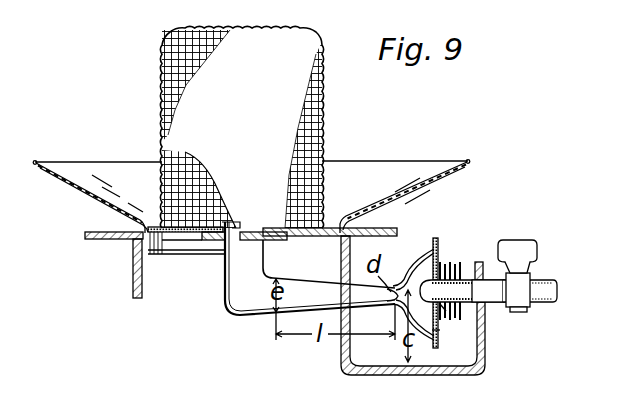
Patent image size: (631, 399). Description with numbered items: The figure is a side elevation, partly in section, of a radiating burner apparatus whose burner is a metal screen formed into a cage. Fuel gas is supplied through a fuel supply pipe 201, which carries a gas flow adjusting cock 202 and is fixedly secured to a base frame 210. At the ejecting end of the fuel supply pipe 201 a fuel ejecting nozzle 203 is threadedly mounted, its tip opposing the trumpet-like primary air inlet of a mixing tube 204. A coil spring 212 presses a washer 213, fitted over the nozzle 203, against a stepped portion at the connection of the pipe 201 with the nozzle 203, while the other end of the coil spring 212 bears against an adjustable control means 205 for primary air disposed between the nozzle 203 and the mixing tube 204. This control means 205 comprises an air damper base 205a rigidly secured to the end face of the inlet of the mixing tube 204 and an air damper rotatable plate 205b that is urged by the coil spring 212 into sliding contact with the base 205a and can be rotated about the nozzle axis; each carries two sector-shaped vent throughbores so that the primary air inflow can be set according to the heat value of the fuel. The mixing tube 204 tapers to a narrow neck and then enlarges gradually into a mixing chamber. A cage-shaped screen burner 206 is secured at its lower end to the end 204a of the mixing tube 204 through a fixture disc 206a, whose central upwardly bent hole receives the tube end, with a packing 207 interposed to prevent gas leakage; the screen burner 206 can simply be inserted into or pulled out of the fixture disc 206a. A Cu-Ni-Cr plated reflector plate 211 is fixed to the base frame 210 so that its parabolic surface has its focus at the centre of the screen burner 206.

The fuel supply pipe 201 is at (538, 300).
The gas flow adjusting cock 202 is at (532, 248).
The fuel ejecting nozzle 203 is at (450, 281).
The mixing tube 204 is at (320, 287).
The end of the mixing tube 204a is at (229, 221).
The control means for adjusting inflow of primary air 205 is at (438, 248).
The air damper base 205a is at (433, 335).
The air damper rotatable plate 205b is at (446, 312).
The screen burner 206 is at (161, 86).
The fixture disc 206a is at (167, 256).
The packing 207 is at (203, 240).
The base frame 210 is at (385, 228).
The reflector plate 211 is at (390, 160).
The coil spring 212 is at (455, 306).
The washer 213 is at (468, 262).